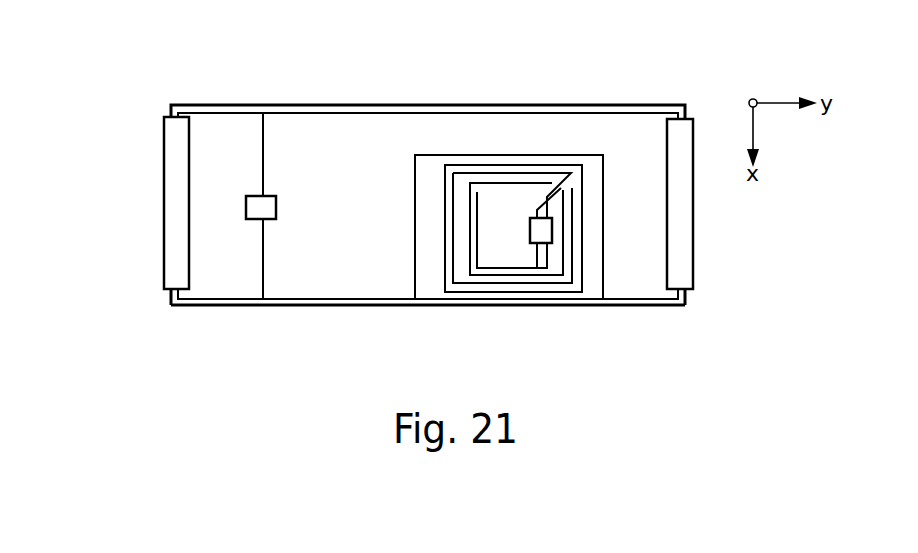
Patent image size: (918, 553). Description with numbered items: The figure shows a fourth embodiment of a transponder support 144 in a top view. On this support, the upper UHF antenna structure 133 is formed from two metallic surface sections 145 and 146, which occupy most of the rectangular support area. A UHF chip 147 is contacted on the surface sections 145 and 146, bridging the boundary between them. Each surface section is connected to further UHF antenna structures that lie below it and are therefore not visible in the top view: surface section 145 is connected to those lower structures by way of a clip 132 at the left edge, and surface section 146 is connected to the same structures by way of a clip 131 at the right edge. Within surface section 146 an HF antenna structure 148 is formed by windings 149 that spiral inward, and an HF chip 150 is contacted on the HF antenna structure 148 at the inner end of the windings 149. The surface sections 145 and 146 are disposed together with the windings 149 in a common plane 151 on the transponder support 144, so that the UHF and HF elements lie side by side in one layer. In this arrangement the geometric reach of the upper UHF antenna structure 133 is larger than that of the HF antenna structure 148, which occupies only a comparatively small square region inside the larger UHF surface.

The clip 131 is at (683, 219).
The clip 132 is at (167, 188).
The upper UHF antenna structure 133 is at (358, 316).
The transponder support 144 is at (403, 90).
The surface section 145 is at (217, 132).
The surface section 146 is at (338, 157).
The UHF chip 147 is at (260, 206).
The HF antenna structure 148 is at (516, 157).
The windings 149 is at (500, 165).
The HF chip 150 is at (541, 218).
The common plane 151 is at (587, 284).